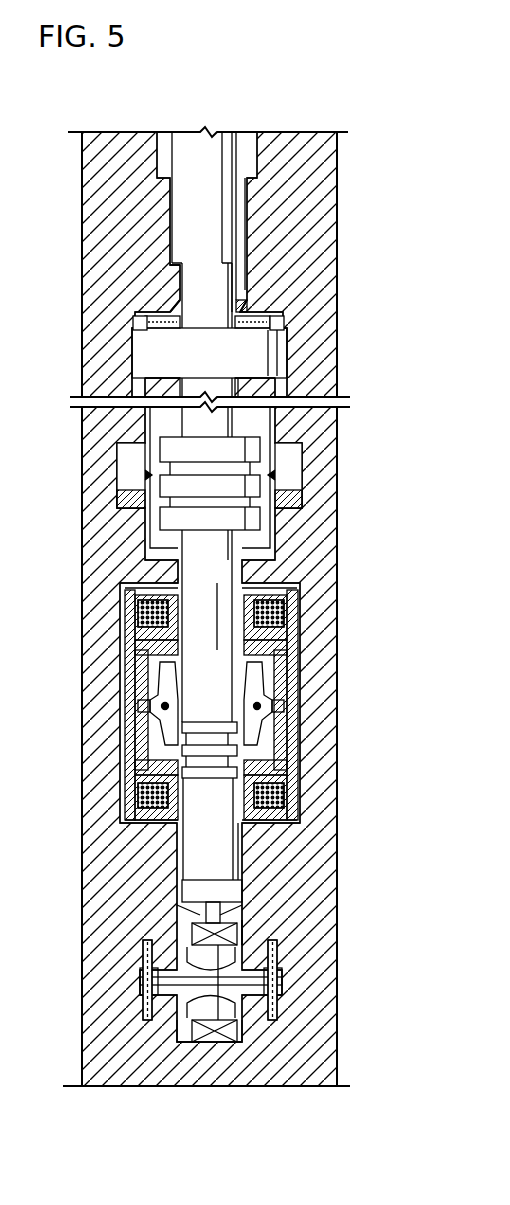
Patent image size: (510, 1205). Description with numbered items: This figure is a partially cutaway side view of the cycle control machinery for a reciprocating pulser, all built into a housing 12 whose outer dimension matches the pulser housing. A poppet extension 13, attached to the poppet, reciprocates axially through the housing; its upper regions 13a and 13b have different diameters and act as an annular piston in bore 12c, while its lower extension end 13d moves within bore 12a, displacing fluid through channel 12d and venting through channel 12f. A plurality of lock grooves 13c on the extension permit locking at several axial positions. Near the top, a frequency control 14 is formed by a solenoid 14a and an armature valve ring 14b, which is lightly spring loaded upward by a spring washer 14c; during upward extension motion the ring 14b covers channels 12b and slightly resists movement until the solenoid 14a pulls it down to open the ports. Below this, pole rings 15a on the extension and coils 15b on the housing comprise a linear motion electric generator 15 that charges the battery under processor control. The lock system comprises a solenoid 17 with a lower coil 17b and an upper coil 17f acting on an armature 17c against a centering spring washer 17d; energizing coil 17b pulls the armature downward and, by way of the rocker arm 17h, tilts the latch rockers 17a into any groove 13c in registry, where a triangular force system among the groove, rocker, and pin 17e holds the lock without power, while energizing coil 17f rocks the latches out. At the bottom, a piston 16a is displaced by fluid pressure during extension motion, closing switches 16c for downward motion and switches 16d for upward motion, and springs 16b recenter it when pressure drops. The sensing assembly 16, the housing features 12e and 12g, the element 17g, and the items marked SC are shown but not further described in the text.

The housing 12 is at (78, 199).
The bore 12a is at (228, 903).
The channels 12b is at (165, 302).
The bore 12c is at (172, 272).
The channel 12d is at (200, 912).
The housing lower bore 12e is at (245, 922).
The channel 12f is at (152, 1052).
The housing bottom recess 12g is at (243, 1028).
The poppet extension 13 is at (221, 489).
The region 13a is at (217, 245).
The region 13b is at (207, 295).
The lock grooves 13c is at (209, 669).
The extension end 13d is at (224, 855).
The frequency control 14 is at (197, 338).
The solenoid 14a is at (223, 363).
The armature valve ring 14b is at (145, 320).
The spring washer 14c is at (138, 334).
The linear motion electric generator 15 is at (247, 477).
The pole rings 15a is at (228, 495).
The coils 15b is at (145, 479).
The lower bearing assembly 16 is at (203, 1021).
The piston 16a is at (170, 1040).
The springs 16b is at (243, 927).
The switches 16c is at (145, 1000).
The switches 16d is at (145, 960).
The solenoid 17 is at (207, 705).
The latch rockers 17a is at (165, 680).
The coil 17b is at (138, 800).
The armature 17c is at (140, 753).
The centering spring washer 17d is at (300, 768).
The pin 17e is at (140, 706).
The coil 17f is at (138, 614).
The right fly weight 17g is at (290, 703).
The rocker arm 17h is at (292, 708).
The set screw SC is at (300, 380).